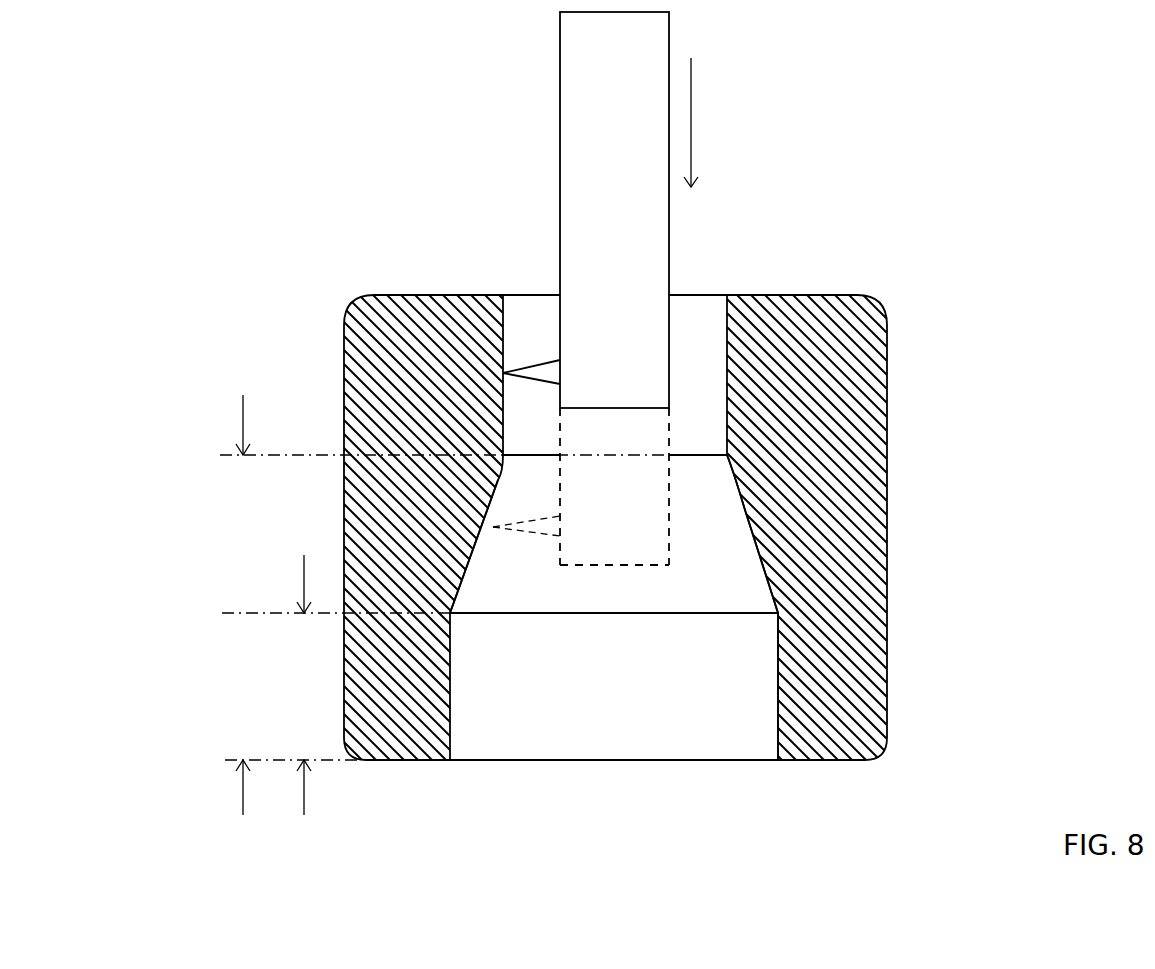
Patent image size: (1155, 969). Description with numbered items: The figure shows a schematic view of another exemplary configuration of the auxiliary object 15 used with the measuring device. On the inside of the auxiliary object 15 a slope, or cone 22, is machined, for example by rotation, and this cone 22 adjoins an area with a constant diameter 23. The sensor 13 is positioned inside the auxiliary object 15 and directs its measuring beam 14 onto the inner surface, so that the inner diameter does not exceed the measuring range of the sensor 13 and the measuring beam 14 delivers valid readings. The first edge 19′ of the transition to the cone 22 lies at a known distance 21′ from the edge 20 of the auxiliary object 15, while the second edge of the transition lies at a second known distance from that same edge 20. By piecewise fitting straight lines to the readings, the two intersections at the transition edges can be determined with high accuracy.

The sensor 13 is at (645, 204).
The measuring beam 14 is at (495, 665).
The auxiliary object 15 is at (840, 325).
The first edge of the transition 19′ is at (778, 606).
The edge of the auxiliary object 20 is at (825, 757).
The known distance 21′ is at (317, 710).
The slope (cone) 22 is at (750, 523).
The area with a constant diameter 23 is at (773, 677).